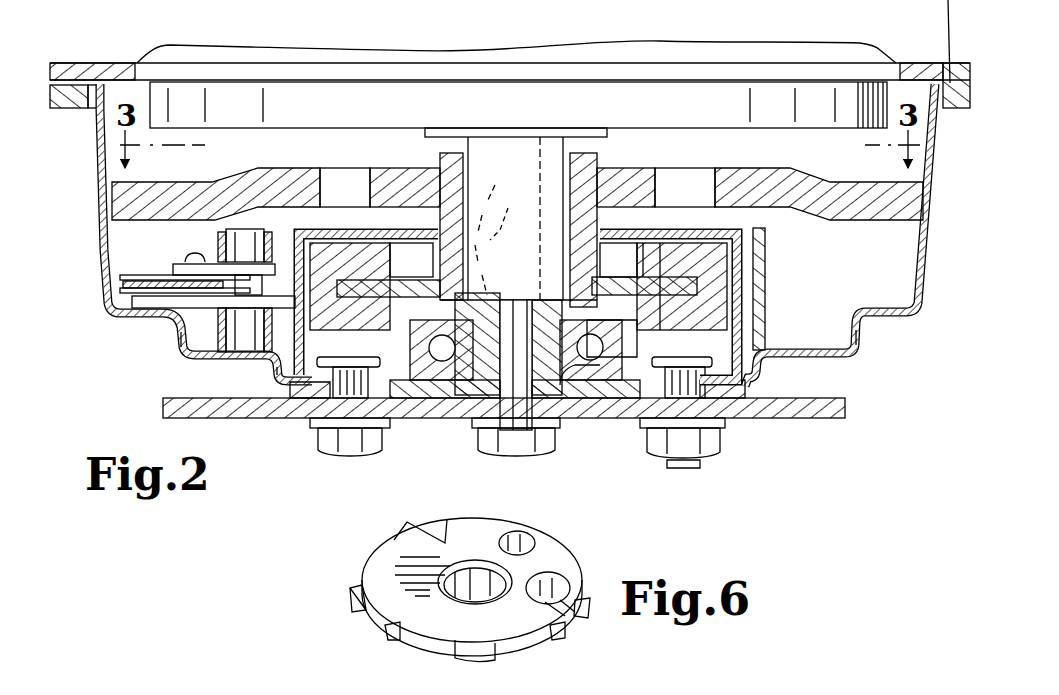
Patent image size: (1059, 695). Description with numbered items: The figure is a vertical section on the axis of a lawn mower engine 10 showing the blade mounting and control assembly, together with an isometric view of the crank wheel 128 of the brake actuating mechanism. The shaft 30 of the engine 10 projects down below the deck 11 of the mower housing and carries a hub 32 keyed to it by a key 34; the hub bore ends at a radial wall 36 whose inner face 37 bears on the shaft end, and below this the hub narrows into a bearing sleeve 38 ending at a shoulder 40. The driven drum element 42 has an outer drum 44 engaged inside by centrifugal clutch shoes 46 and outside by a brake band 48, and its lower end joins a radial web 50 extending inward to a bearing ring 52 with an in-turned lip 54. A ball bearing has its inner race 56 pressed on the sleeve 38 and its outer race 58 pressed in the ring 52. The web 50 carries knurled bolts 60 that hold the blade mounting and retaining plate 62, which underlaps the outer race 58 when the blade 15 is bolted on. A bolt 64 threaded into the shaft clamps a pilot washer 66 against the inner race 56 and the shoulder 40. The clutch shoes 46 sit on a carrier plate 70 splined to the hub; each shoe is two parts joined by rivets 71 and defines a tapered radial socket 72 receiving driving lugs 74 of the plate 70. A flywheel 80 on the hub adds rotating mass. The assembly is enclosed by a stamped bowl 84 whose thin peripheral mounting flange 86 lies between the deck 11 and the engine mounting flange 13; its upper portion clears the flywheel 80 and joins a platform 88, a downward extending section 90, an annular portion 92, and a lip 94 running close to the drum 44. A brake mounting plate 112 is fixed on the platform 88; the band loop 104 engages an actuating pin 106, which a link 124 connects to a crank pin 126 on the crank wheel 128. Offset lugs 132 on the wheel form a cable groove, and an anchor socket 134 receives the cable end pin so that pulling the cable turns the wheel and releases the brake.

In FIG. 2, the engine 10 is at (855, 52).
In FIG. 2, the deck 11 is at (952, 108).
In FIG. 2, the mounting flange 13 is at (916, 62).
In FIG. 2, the blade 15 is at (828, 410).
In FIG. 2, the shaft 30 is at (527, 169).
In FIG. 2, the hub 32 is at (582, 152).
In FIG. 2, the key 34 is at (497, 238).
In FIG. 2, the radial wall 36 is at (547, 302).
In FIG. 2, the inner face 37 is at (540, 301).
In FIG. 2, the bearing sleeve 38 is at (545, 343).
In FIG. 2, the shoulder 40 is at (470, 300).
In FIG. 2, the driven drum element 42 is at (748, 337).
In FIG. 2, the drum 44 is at (293, 230).
In FIG. 2, the centrifugal clutch shoes 46 is at (378, 246).
In FIG. 2, the brake band 48 is at (768, 251).
In FIG. 2, the radial web 50 is at (725, 400).
In FIG. 2, the bearing ring 52 is at (630, 353).
In FIG. 2, the lip 54 is at (640, 273).
In FIG. 2, the inner race 56 is at (580, 393).
In FIG. 2, the outer race 58 is at (608, 387).
In FIG. 2, the bolts 60 is at (668, 472).
In FIG. 2, the blade mounting and retaining plate 62 is at (728, 390).
In FIG. 2, the bolt 64 is at (530, 438).
In FIG. 2, the pilot washer 66 is at (470, 406).
In FIG. 2, the carrier plate 70 is at (617, 310).
In FIG. 2, the rivets 71 is at (352, 230).
In FIG. 2, the radial socket 72 is at (411, 260).
In FIG. 2, the driving lugs 74 is at (670, 300).
In FIG. 2, the flywheel 80 is at (832, 184).
In FIG. 2, the bowl 84 is at (932, 288).
In FIG. 2, the peripheral mounting flange 86 is at (103, 242).
In FIG. 2, the platform 88 is at (893, 314).
In FIG. 2, the downward extending section 90 is at (177, 334).
In FIG. 2, the annular portion 92 is at (270, 374).
In FIG. 2, the lip 94 is at (277, 382).
In FIG. 2, the loop 104 is at (218, 248).
In FIG. 2, the actuating pin 106 is at (243, 340).
In FIG. 2, the brake mounting plate 112 is at (168, 300).
In FIG. 2, the link 124 is at (175, 268).
In FIG. 2, the crank pin 126 is at (200, 262).
In FIG. 2, the crank wheel 128 is at (128, 296).
In FIG. 6, the crank wheel 128 is at (465, 557).
In FIG. 6, the lugs 132 is at (352, 635).
In FIG. 6, the anchor socket 134 is at (553, 578).